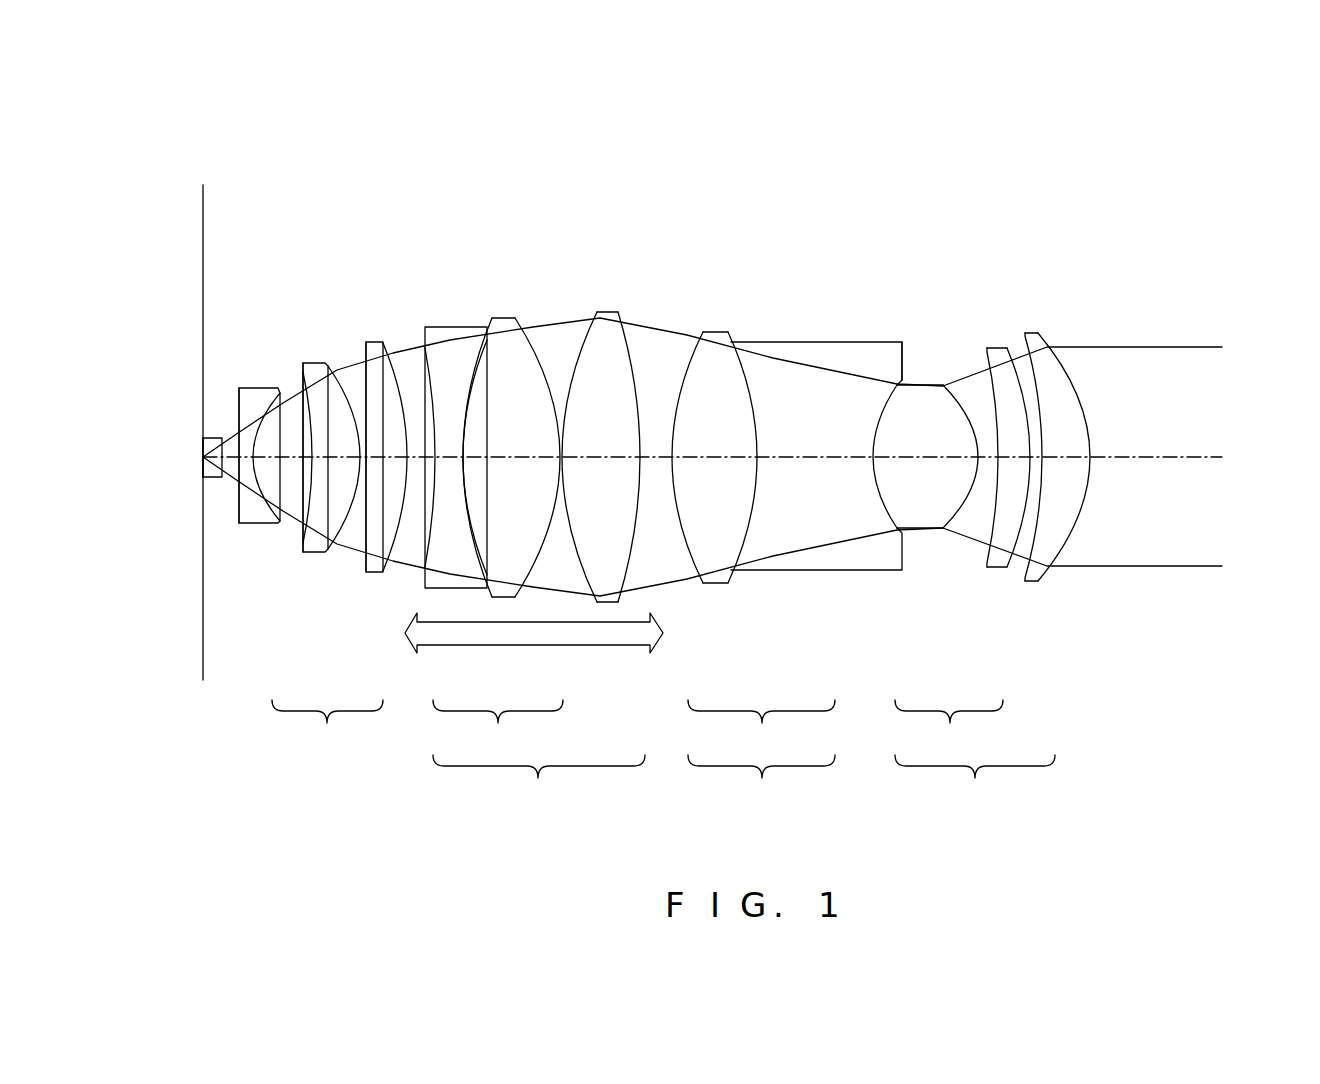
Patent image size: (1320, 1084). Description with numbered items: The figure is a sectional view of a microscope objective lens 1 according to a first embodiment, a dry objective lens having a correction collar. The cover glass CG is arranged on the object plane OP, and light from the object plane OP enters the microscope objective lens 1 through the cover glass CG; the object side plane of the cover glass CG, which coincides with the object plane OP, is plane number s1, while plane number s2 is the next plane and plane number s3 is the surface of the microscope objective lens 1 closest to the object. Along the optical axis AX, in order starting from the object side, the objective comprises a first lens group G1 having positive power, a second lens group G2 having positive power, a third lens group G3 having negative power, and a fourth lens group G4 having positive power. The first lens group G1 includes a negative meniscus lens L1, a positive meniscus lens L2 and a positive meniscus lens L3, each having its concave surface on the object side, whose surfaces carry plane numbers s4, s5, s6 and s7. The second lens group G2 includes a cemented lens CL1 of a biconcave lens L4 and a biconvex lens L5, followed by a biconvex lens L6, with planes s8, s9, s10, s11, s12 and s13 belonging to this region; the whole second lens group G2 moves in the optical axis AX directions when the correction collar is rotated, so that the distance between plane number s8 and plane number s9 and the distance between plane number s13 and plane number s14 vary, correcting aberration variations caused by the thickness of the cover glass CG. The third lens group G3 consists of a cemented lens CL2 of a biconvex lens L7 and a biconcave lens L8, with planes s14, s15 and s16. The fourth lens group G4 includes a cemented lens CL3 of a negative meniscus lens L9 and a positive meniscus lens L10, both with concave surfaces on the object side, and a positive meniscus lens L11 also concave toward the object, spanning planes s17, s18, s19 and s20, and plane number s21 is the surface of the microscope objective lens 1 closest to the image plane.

The microscope objective lens 1 is at (1268, 123).
The object plane OP is at (180, 404).
The optical axis AX is at (714, 420).
The cover glass CG is at (207, 549).
The plane number s1 is at (181, 420).
The plane number s2 is at (226, 389).
The plane number s3 is at (256, 388).
The plane number s4 is at (291, 403).
The plane number s5 is at (319, 399).
The plane number s6 is at (353, 402).
The plane number s7 is at (389, 413).
The plane number s8 is at (432, 411).
The plane number s9 is at (466, 415).
The plane number s10 is at (499, 426).
The plane number s11 is at (549, 426).
The plane number s12 is at (597, 428).
The plane number s13 is at (649, 428).
The plane number s14 is at (702, 419).
The plane number s15 is at (754, 419).
The plane number s16 is at (884, 317).
The plane number s17 is at (916, 391).
The plane number s18 is at (975, 391).
The plane number s19 is at (1020, 411).
The plane number s20 is at (1065, 418).
The plane number s21 is at (1097, 418).
The negative meniscus lens L1 is at (259, 476).
The positive meniscus lens L2 is at (325, 476).
The positive meniscus lens L3 is at (386, 476).
The biconcave lens L4 is at (452, 476).
The biconvex lens L5 is at (523, 476).
The biconvex lens L6 is at (621, 476).
The biconvex lens L7 is at (726, 476).
The biconcave lens L8 is at (820, 476).
The negative meniscus lens L9 is at (940, 477).
The positive meniscus lens L10 is at (1007, 476).
The positive meniscus lens L11 is at (1082, 476).
The first lens group G1 is at (313, 504).
The second lens group G2 is at (542, 533).
The third lens group G3 is at (791, 533).
The fourth lens group G4 is at (1015, 533).
The cemented lens CL1 is at (500, 504).
The cemented lens CL2 is at (791, 504).
The cemented lens CL3 is at (963, 504).